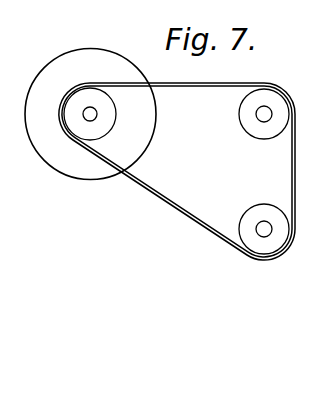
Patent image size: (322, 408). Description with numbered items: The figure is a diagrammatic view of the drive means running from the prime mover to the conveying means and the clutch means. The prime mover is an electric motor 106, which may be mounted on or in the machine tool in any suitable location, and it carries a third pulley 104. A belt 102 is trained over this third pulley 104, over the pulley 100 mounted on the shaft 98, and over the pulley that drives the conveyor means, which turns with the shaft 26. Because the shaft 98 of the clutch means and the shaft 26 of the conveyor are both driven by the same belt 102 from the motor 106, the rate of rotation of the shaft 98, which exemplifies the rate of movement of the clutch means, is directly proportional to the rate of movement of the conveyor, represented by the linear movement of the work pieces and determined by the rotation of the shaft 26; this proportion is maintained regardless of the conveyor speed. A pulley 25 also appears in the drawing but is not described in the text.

The electric motor 106 is at (45, 87).
The third pulley 104 is at (81, 116).
The pulley 25 is at (252, 129).
The shaft 26 is at (257, 111).
The pulley 100 is at (263, 210).
The shaft 98 is at (258, 232).
The belt 102 is at (172, 200).